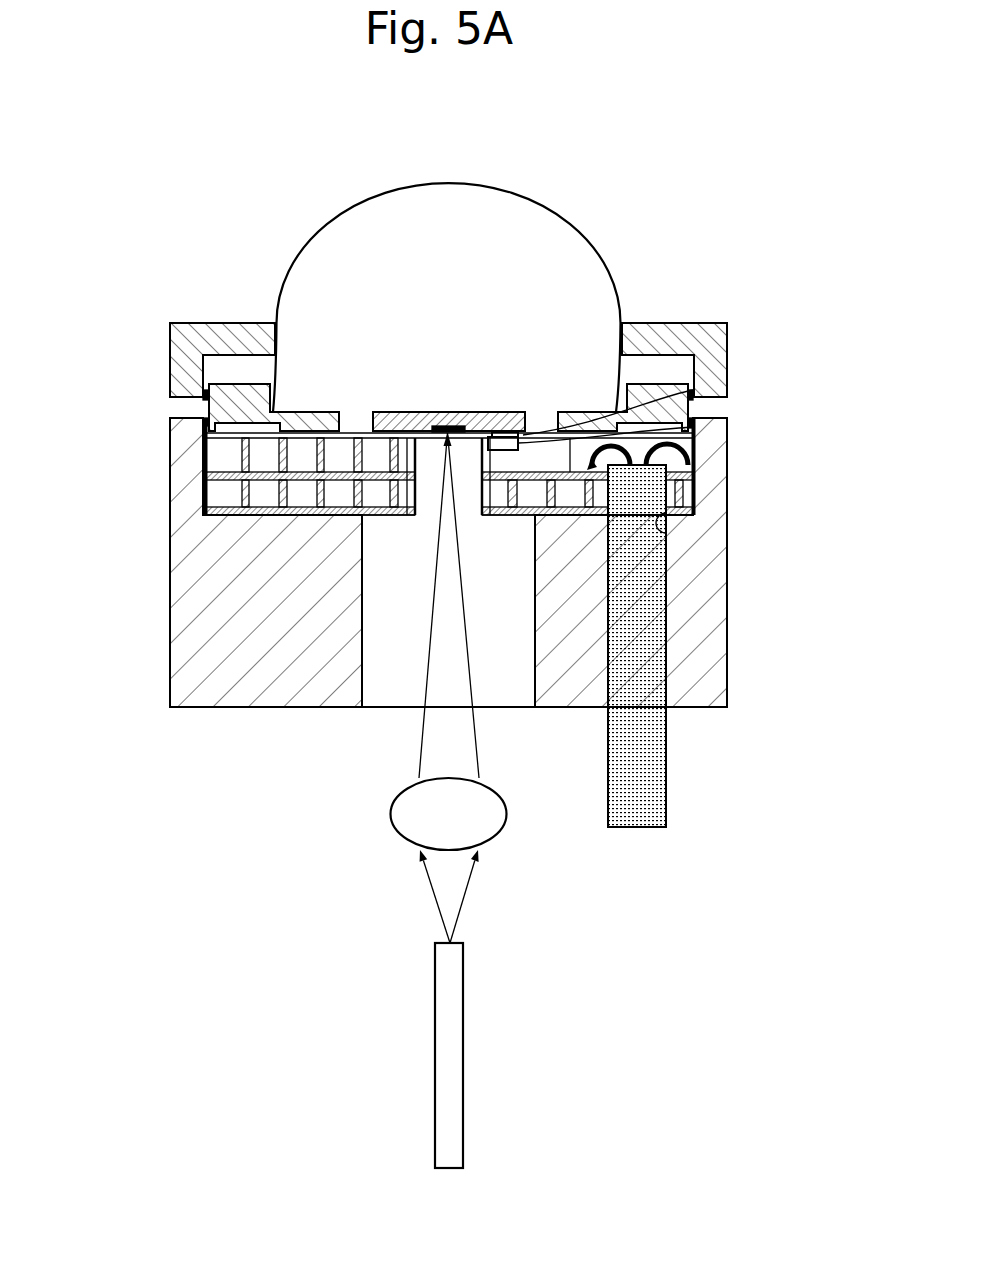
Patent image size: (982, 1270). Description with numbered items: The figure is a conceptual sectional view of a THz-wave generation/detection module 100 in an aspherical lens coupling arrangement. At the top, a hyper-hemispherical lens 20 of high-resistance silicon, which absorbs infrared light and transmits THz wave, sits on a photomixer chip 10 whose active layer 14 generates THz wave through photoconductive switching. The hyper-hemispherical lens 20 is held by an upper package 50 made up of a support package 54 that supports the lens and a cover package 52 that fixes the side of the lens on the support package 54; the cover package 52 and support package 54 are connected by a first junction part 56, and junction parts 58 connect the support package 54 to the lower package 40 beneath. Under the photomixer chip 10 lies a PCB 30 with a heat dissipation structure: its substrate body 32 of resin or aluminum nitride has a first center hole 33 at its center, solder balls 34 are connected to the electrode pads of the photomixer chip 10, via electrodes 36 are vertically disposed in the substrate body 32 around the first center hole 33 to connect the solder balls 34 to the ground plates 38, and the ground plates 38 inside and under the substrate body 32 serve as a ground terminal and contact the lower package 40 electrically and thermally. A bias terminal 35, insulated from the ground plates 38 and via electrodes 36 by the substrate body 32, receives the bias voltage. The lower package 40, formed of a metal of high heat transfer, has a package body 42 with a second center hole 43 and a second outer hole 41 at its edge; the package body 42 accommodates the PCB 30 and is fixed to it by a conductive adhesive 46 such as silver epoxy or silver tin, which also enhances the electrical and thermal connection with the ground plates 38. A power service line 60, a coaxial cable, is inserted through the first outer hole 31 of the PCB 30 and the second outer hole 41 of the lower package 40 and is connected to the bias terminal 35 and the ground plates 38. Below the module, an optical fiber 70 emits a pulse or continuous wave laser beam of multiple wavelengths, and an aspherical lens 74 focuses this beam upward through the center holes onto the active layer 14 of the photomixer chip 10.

The photomixer chip 10 is at (498, 420).
The active layer 14 is at (449, 427).
The hyper-hemispherical lens 20 is at (515, 205).
The PCB 30 is at (792, 378).
The first outer hole 31 is at (667, 535).
The substrate body 32 is at (560, 457).
The first center hole 33 is at (480, 493).
The solder ball 34 is at (693, 390).
The bias terminal 35 is at (693, 427).
The via electrode 36 is at (590, 496).
The ground plate 38 is at (583, 515).
The lower package 40 is at (95, 485).
The second outer hole 41 is at (655, 657).
The package body 42 is at (178, 567).
The second center hole 43 is at (398, 630).
The conductive adhesive 46 is at (205, 494).
The upper package 50 is at (95, 332).
The cover package 52 is at (178, 340).
The support package 54 is at (232, 390).
The first junction part 56 is at (205, 402).
The junction part 58 is at (212, 414).
The power service line 60 is at (652, 622).
The optical fiber 70 is at (442, 1071).
The aspherical lens 74 is at (405, 820).
The THz-wave generation/detection module 100 is at (675, 239).